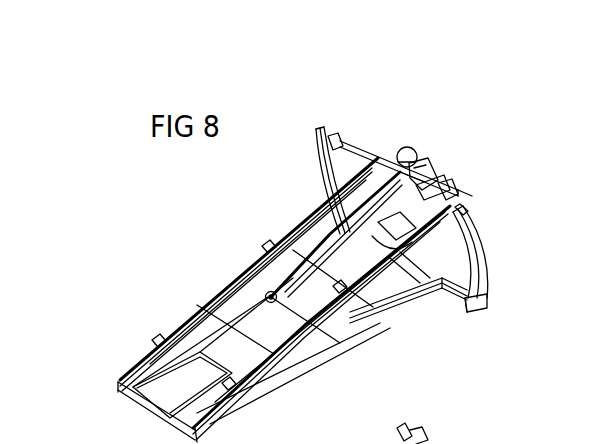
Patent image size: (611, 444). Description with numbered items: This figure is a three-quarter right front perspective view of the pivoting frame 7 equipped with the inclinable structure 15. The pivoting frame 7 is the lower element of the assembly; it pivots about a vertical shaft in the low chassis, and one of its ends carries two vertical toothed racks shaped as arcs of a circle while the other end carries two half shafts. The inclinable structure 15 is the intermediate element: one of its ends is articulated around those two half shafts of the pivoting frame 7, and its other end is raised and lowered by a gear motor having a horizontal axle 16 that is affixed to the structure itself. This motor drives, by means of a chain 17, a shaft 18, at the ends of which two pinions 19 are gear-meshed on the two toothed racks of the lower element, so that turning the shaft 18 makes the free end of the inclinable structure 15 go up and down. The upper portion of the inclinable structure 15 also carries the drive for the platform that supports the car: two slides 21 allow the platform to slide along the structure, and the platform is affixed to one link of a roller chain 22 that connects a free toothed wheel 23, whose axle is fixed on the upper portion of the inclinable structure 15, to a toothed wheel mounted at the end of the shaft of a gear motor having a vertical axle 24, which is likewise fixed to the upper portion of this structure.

The pivoting frame 7 is at (343, 320).
The inclinable structure 15 is at (396, 250).
The gear motor having a horizontal axle 16 is at (424, 166).
The chain 17 is at (445, 188).
The shaft 18 is at (368, 160).
The pinions 19 is at (329, 128).
The slides 21 is at (205, 302).
The roller chain 22 is at (313, 250).
The free toothed wheel 23 is at (267, 292).
The gear motor having a vertical axle 24 is at (414, 149).